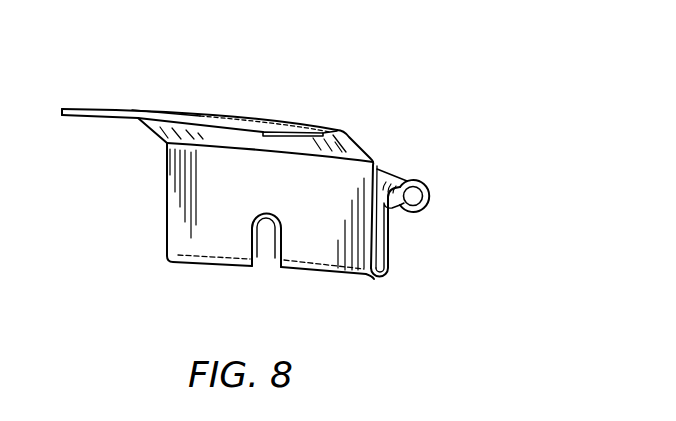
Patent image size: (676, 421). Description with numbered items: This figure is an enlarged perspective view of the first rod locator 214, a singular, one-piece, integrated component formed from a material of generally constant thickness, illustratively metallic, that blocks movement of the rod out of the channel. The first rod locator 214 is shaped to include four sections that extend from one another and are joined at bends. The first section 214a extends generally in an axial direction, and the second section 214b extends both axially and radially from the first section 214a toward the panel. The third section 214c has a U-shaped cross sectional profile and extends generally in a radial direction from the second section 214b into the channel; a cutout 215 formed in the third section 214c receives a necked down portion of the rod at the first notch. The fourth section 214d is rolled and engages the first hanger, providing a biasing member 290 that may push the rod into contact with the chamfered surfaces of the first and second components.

The first rod locator 214 is at (303, 167).
The first section 214a is at (221, 112).
The second section 214b is at (360, 152).
The third section 214c is at (166, 227).
The fourth section 214d is at (403, 177).
The cutout 215 is at (265, 278).
The biasing member 290 is at (438, 210).